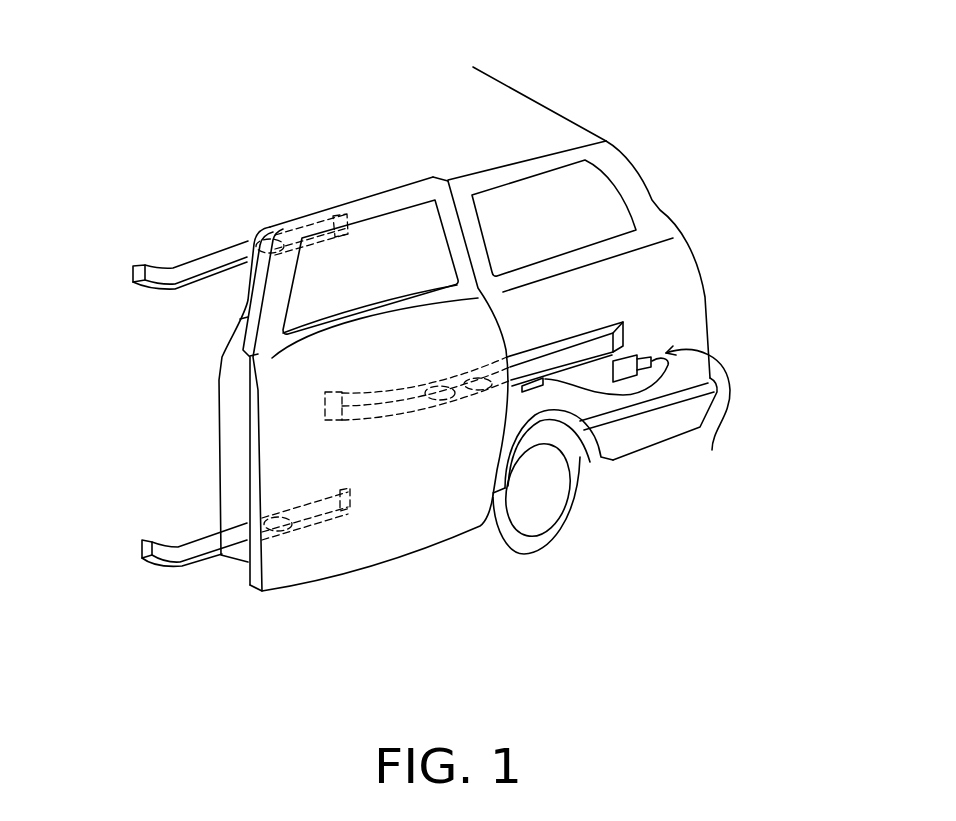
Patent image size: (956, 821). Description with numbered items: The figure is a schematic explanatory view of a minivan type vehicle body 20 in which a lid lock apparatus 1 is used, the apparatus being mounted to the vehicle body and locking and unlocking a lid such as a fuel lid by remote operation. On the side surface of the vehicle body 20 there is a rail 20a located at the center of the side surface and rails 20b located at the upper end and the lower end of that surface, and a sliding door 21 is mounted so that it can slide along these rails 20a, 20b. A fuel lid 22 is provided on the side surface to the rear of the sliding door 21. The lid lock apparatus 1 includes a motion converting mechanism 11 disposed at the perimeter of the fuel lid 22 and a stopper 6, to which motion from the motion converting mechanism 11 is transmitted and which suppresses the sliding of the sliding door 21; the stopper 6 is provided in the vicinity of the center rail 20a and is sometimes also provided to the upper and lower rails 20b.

The lid lock apparatus 1 is at (640, 419).
The stopper 6 is at (541, 386).
The motion converting mechanism 11 is at (623, 517).
The vehicle body 20 is at (575, 100).
The rail 20a is at (556, 346).
The rails 20b is at (187, 276).
The sliding door 21 is at (380, 548).
The fuel lid 22 is at (630, 358).